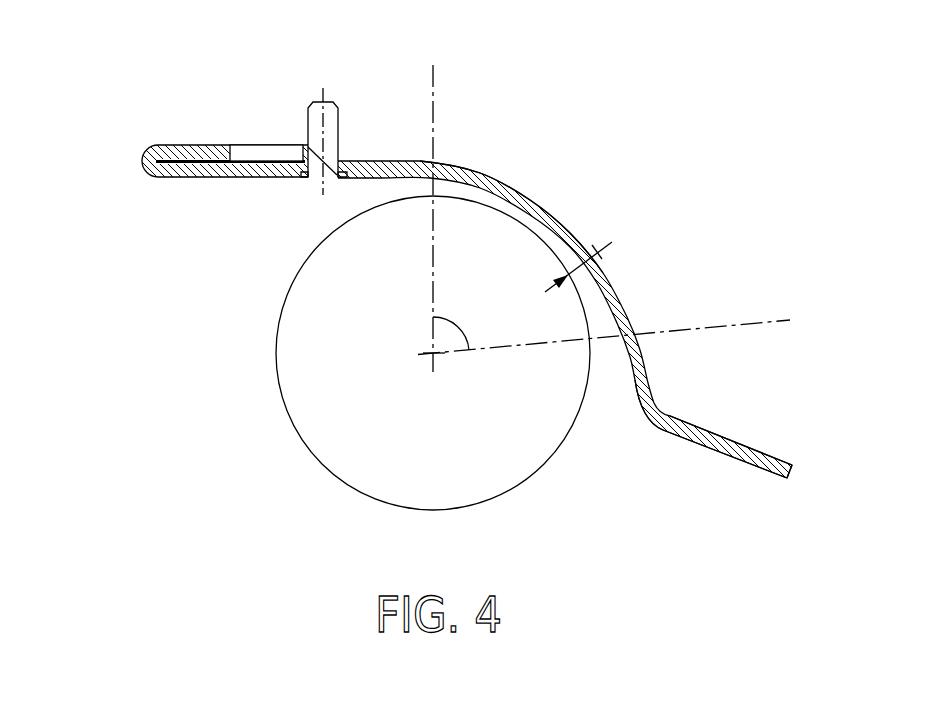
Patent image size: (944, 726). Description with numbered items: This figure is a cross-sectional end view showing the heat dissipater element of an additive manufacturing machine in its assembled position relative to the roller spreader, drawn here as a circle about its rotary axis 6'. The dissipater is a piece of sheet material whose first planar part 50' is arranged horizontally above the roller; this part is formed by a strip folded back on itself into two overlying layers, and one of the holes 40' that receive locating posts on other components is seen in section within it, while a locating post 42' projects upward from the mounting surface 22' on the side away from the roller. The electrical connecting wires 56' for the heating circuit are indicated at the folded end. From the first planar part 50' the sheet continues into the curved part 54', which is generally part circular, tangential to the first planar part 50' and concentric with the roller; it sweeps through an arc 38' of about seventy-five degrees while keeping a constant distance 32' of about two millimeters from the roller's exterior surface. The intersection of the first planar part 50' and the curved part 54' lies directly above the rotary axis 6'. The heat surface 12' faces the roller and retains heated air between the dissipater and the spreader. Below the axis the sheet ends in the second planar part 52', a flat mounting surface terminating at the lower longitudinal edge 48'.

The rotary axis 6' is at (400, 353).
The first planar part 50' is at (186, 128).
The electrical connecting wires 56' is at (113, 187).
The holes 40' is at (253, 118).
The locating posts 42' is at (370, 117).
The mounting surface 22' is at (565, 319).
The curved part 54' is at (517, 192).
The heat surface 12' is at (614, 433).
The second planar part 52' is at (740, 431).
The lower longitudinal edge 48' is at (826, 509).
The arc 38' is at (504, 213).
The constant distance 32' is at (626, 268).